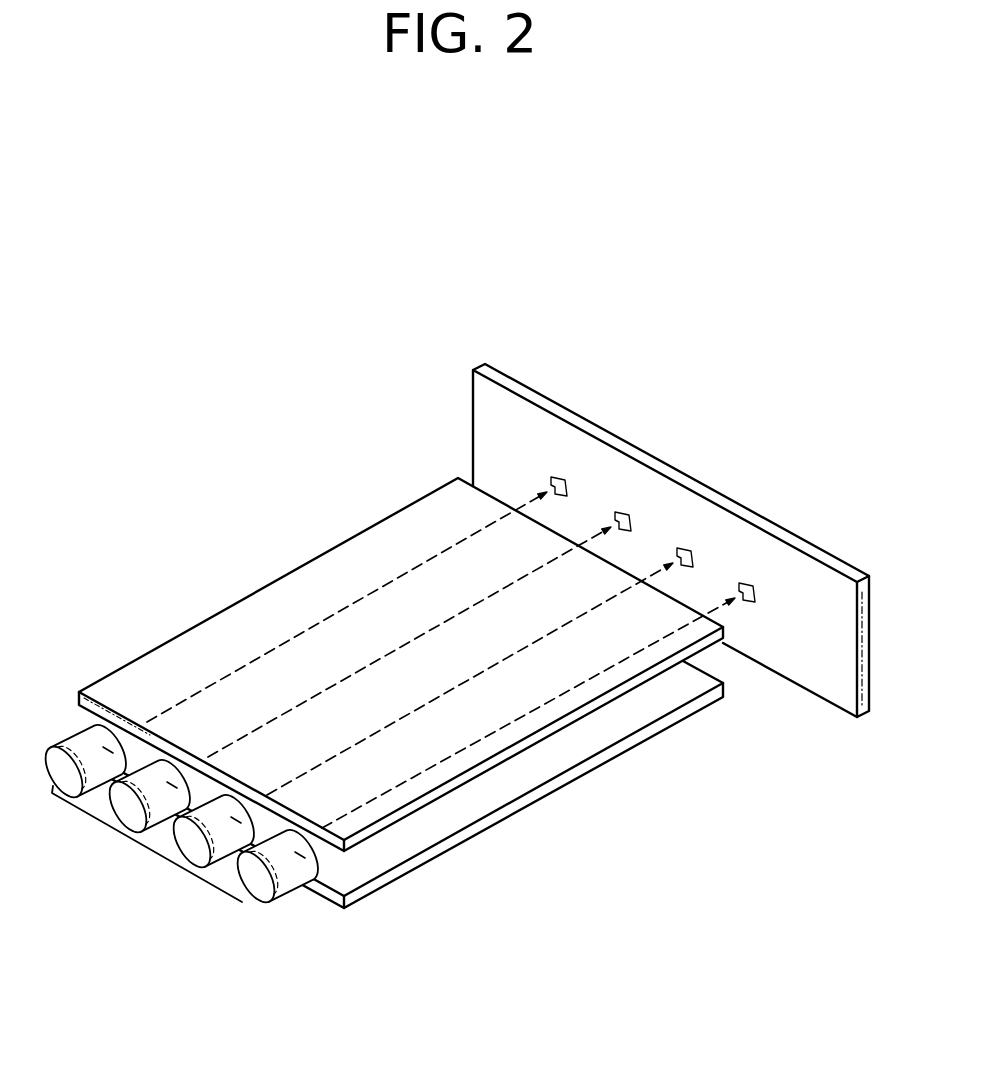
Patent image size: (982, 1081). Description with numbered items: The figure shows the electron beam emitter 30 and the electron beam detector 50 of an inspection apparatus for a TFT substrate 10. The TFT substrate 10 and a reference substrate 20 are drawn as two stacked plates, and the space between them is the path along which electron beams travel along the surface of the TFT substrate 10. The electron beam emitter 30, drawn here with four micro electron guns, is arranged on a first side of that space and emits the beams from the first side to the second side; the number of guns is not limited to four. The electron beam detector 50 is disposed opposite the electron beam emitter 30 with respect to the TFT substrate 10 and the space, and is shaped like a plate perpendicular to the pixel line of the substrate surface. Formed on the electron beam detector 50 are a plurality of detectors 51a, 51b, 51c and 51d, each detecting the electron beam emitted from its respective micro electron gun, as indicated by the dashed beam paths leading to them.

The TFT substrate 10 is at (570, 782).
The reference substrate 20 is at (245, 609).
The electron beam emitter 30 is at (131, 840).
The electron beam detector 50 is at (834, 553).
The detector 51a is at (741, 583).
The detector 51b is at (679, 548).
The detector 51c is at (617, 512).
The detector 51d is at (553, 477).